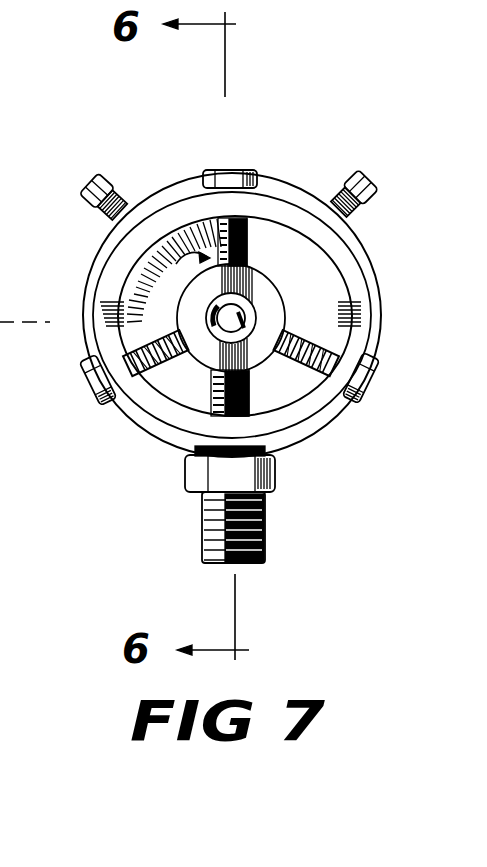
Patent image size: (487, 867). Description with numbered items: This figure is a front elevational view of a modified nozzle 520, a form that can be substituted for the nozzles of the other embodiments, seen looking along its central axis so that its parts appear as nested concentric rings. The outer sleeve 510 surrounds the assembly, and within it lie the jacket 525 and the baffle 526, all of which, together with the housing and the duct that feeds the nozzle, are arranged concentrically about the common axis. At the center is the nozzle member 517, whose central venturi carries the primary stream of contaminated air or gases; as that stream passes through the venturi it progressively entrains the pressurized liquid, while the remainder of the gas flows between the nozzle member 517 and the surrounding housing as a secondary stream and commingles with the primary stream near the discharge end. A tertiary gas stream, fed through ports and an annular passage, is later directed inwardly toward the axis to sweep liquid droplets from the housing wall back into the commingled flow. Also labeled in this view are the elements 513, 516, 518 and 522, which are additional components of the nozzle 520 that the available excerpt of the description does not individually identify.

The sleeve 510 is at (318, 164).
The jacket 525 is at (168, 198).
The baffle 526 is at (113, 291).
The nozzle 520 is at (368, 312).
The hub 518 is at (296, 262).
The central bolt 522 is at (206, 318).
The nozzle member 517 is at (177, 271).
The clamping nuts 516 is at (246, 168).
The threaded fittings 513 is at (94, 196).